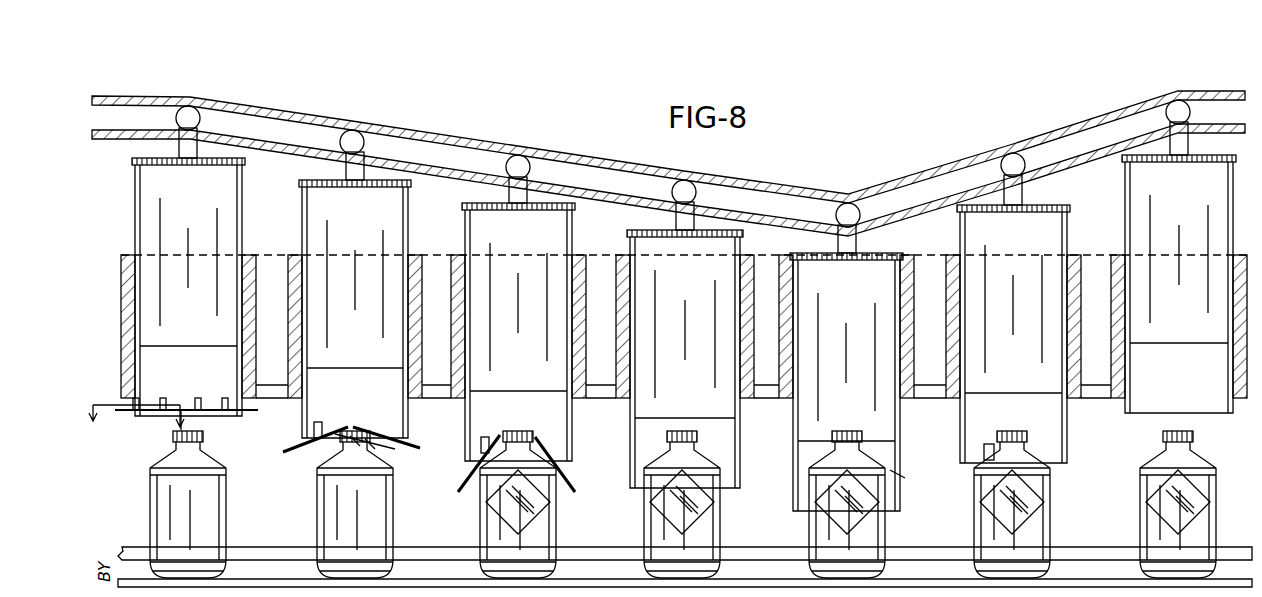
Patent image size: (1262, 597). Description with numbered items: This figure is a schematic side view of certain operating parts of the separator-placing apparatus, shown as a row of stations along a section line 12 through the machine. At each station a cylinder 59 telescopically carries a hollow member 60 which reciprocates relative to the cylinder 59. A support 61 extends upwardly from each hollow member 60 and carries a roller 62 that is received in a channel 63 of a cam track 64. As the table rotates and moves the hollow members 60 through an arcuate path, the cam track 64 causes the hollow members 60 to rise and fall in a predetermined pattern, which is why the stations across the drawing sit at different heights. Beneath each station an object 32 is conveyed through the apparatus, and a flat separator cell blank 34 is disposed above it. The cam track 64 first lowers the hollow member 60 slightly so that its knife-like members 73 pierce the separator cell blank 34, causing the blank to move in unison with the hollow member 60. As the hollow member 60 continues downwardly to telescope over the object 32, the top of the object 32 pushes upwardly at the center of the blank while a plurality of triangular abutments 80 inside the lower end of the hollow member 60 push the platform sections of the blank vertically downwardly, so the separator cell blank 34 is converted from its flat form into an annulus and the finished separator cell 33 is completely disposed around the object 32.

The section line 12- 12 is at (139, 405).
The object 32 is at (203, 483).
The separator cell 33 is at (318, 449).
The separator cell blank 34 is at (126, 413).
The cylinder 59 is at (257, 262).
The hollow member 60 is at (200, 238).
The support 61 is at (190, 152).
The roller 62 is at (193, 109).
The channel 63 is at (268, 130).
The cam track 64 is at (398, 112).
The knife-like member 73 is at (298, 441).
The triangular abutment 80 is at (322, 432).